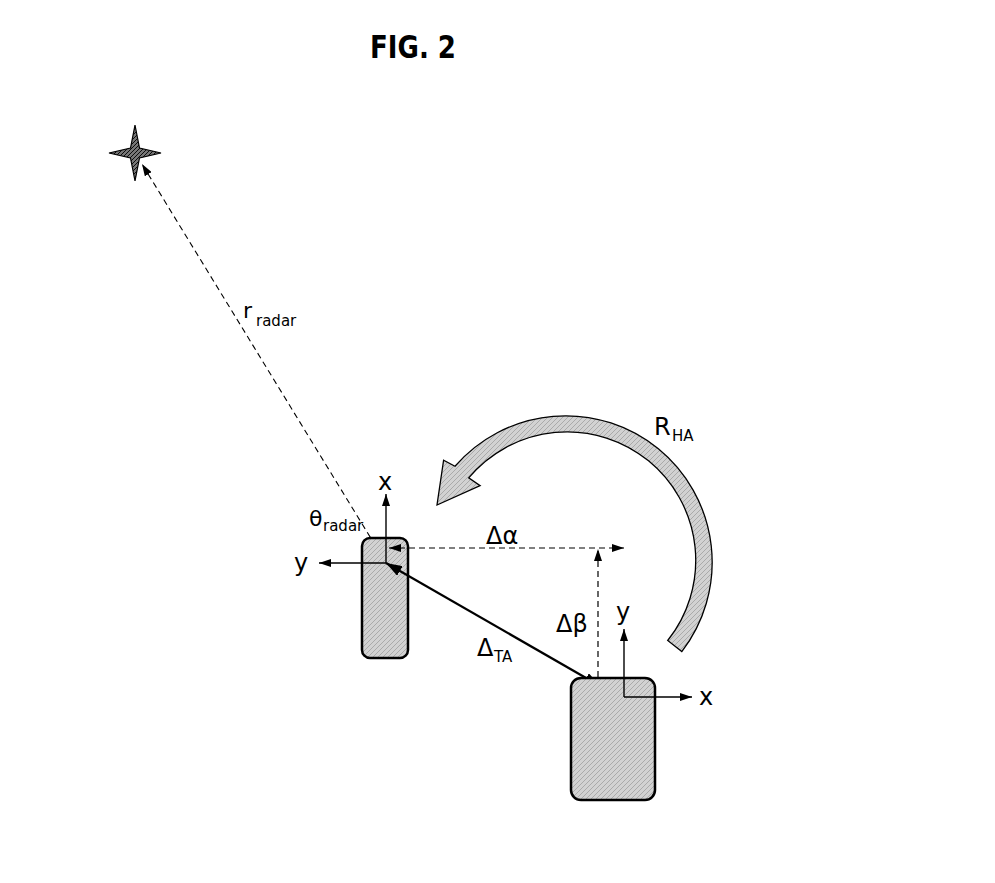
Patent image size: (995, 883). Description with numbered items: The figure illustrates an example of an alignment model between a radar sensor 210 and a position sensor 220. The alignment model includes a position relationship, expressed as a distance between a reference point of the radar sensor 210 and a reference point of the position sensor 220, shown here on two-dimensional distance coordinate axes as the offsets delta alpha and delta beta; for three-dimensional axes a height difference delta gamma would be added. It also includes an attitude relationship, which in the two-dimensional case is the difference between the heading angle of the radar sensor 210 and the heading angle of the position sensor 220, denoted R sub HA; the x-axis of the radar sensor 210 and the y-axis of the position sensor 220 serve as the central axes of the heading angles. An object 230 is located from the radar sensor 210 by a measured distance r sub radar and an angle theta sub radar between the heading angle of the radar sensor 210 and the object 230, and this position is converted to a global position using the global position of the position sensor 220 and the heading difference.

The radar sensor 210 is at (385, 660).
The position sensor 220 is at (610, 802).
The object 230 is at (141, 141).